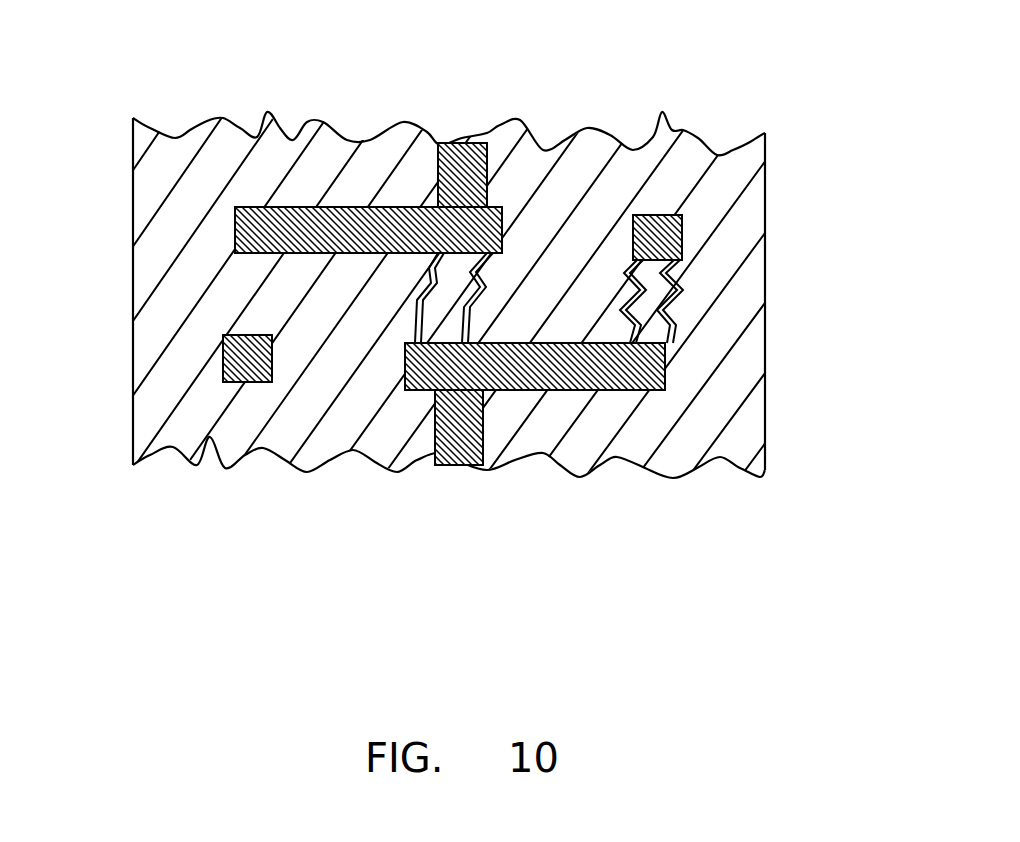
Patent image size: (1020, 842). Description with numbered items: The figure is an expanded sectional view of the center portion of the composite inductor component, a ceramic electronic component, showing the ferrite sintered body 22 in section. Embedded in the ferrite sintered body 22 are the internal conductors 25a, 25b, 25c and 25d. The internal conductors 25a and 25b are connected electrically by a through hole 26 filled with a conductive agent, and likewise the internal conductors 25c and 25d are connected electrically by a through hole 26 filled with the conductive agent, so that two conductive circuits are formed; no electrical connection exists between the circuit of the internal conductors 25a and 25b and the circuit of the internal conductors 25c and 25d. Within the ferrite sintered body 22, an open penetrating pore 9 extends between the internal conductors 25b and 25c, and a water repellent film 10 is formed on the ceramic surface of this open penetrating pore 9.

The open penetrating pore 9 is at (463, 262).
The water repellent film 10 is at (420, 298).
The ferrite sintered body 22 is at (710, 430).
The internal conductor 25a is at (248, 205).
The internal conductor 25b is at (641, 214).
The internal conductor 25c is at (257, 383).
The internal conductor 25d is at (602, 392).
The through hole filled with a conductive agent 26 is at (465, 143).